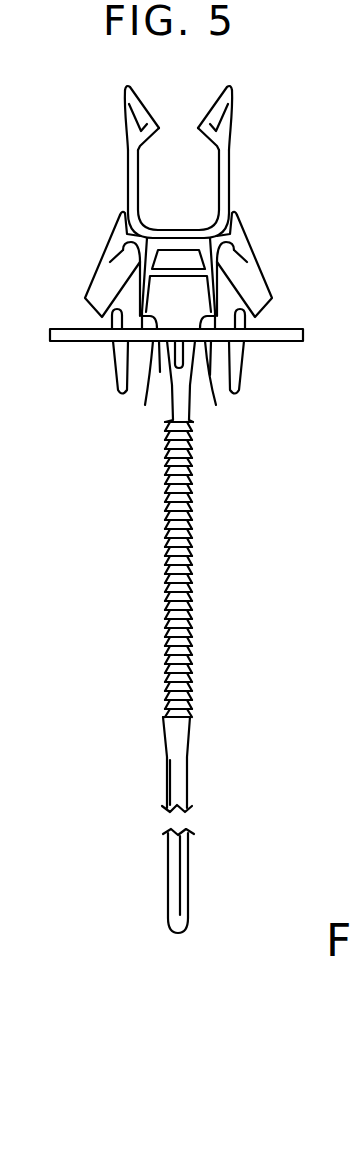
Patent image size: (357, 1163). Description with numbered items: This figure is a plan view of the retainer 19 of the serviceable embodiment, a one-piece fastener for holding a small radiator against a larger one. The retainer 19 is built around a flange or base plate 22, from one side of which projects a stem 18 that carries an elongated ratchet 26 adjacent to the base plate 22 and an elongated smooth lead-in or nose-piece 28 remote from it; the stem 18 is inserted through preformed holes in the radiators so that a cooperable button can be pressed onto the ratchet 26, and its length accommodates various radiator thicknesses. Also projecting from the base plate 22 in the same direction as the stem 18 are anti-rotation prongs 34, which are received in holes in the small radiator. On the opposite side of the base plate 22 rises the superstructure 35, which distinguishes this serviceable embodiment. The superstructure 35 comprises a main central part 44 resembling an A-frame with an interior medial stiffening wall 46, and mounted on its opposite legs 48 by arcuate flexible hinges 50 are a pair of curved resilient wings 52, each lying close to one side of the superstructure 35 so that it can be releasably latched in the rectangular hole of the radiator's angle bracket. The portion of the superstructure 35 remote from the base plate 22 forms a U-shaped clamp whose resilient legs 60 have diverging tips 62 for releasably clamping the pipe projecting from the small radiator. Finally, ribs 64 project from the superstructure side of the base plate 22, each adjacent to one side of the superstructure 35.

The stem 18 is at (157, 762).
The retainer 19 is at (213, 529).
The base plate 22 is at (288, 334).
The ratchet 26 is at (183, 560).
The nose-piece 28 is at (182, 887).
The anti-rotation prongs 34 is at (120, 380).
The superstructure 35 is at (240, 177).
The main central part 44 is at (182, 297).
The medial stiffening wall 46 is at (156, 308).
The legs 48 is at (151, 365).
The arcuate flexible hinges 50 is at (123, 250).
The curved resilient wings 52 is at (102, 275).
The resilient legs 60 is at (130, 157).
The diverging tips 62 is at (225, 100).
The ribs 64 is at (112, 322).